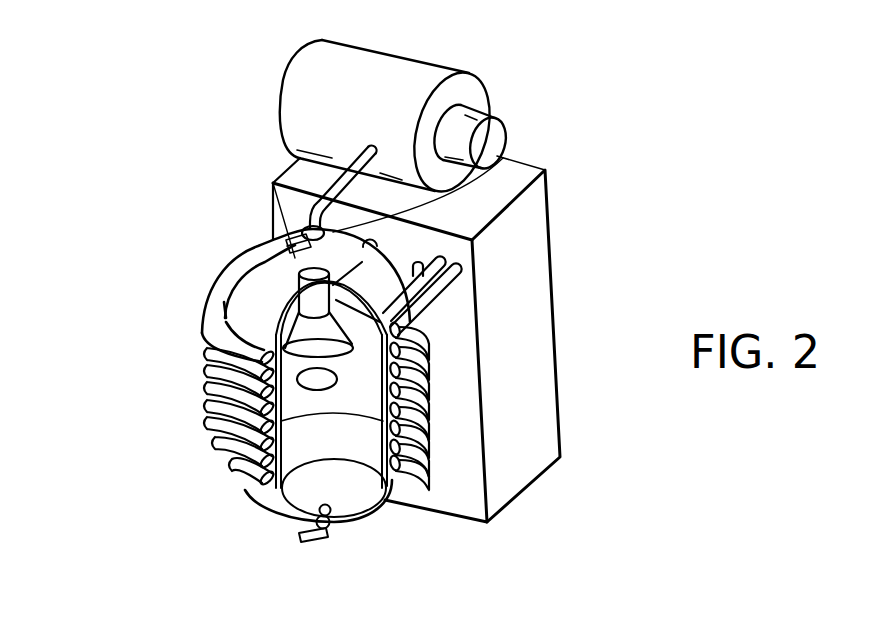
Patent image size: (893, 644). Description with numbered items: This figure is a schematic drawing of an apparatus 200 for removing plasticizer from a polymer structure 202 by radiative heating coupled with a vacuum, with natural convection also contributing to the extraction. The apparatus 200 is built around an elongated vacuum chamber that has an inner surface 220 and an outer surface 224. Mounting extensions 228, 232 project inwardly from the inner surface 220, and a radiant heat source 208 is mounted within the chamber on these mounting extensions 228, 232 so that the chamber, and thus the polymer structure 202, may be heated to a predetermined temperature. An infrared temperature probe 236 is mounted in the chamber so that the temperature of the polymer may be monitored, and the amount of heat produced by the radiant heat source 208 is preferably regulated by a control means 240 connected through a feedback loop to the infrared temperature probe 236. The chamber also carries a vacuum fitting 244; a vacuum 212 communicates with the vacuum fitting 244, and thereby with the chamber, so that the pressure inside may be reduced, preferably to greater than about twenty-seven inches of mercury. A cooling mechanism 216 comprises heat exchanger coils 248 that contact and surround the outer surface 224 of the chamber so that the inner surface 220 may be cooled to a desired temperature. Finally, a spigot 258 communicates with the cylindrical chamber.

The apparatus 200 is at (160, 133).
The polymer structure 202 is at (317, 391).
The radiant heat source 208 is at (291, 255).
The vacuum 212 is at (402, 82).
The cooling mechanism 216 is at (188, 387).
The inner surface 220 is at (357, 490).
The outer surface 224 is at (257, 287).
The mounting extension 228 is at (540, 169).
The mounting extension 232 is at (393, 267).
The infrared temperature probe 236 is at (366, 366).
The control means 240 is at (527, 242).
The vacuum fitting 244 is at (305, 225).
The heat exchanger coils 248 is at (210, 447).
The spigot 258 is at (330, 540).